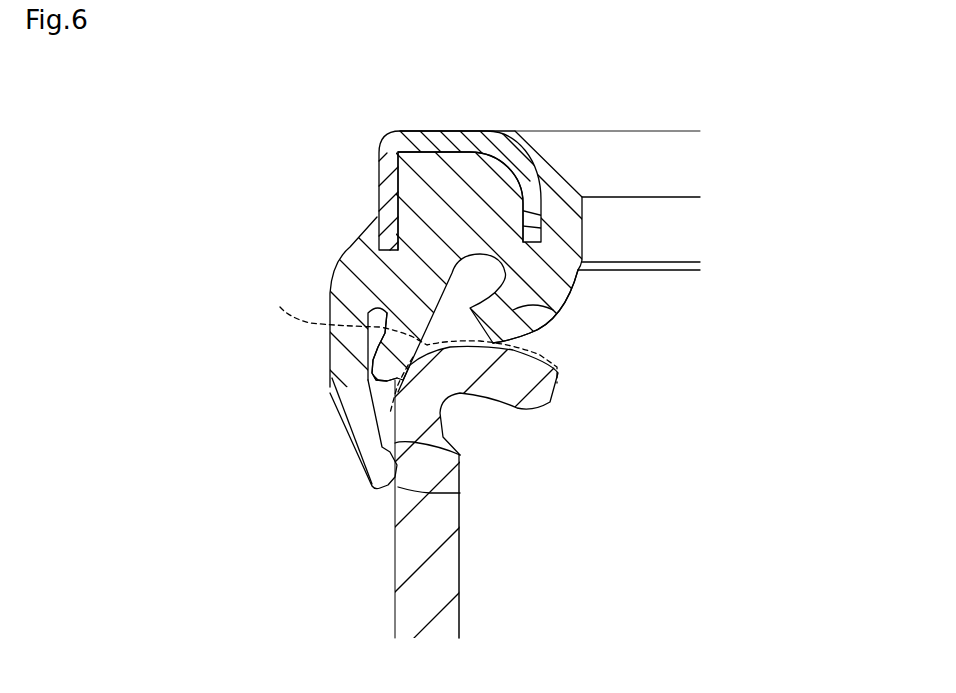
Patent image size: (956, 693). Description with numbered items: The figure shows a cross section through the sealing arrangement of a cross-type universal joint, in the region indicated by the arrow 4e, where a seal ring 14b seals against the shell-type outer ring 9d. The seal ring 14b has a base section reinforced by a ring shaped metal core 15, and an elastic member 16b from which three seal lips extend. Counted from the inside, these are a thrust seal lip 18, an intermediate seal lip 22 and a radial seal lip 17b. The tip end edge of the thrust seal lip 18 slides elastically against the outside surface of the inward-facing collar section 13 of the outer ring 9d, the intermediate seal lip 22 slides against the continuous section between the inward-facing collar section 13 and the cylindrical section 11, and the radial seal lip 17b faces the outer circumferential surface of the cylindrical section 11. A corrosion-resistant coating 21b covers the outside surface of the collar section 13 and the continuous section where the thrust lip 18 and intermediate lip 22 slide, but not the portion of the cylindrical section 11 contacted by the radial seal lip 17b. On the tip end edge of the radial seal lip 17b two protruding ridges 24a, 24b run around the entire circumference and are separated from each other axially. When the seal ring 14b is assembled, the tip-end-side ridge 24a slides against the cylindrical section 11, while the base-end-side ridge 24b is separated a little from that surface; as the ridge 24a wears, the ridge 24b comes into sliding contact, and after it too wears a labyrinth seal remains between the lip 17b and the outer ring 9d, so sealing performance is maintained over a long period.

The seal attachment portion 4e is at (595, 433).
The shell-type outer ring 9d is at (443, 588).
The cylindrical section 11 is at (413, 602).
The inward-facing collar section 13 is at (483, 380).
The seal ring 14b is at (348, 242).
The ring shaped metal core 15 is at (427, 142).
The elastic member 16b is at (457, 203).
The radial seal lip 17b is at (350, 430).
The thrust seal lip 18 is at (553, 307).
The corrosion-resistant coating 21b is at (407, 348).
The intermediate seal lip 22 is at (390, 358).
The protruding ridge 24a is at (460, 493).
The protruding ridge 24b is at (460, 455).